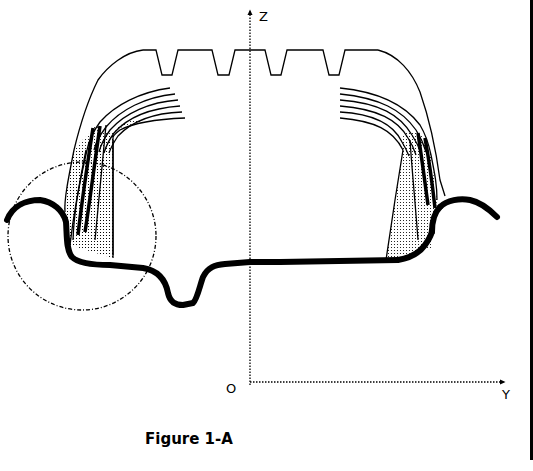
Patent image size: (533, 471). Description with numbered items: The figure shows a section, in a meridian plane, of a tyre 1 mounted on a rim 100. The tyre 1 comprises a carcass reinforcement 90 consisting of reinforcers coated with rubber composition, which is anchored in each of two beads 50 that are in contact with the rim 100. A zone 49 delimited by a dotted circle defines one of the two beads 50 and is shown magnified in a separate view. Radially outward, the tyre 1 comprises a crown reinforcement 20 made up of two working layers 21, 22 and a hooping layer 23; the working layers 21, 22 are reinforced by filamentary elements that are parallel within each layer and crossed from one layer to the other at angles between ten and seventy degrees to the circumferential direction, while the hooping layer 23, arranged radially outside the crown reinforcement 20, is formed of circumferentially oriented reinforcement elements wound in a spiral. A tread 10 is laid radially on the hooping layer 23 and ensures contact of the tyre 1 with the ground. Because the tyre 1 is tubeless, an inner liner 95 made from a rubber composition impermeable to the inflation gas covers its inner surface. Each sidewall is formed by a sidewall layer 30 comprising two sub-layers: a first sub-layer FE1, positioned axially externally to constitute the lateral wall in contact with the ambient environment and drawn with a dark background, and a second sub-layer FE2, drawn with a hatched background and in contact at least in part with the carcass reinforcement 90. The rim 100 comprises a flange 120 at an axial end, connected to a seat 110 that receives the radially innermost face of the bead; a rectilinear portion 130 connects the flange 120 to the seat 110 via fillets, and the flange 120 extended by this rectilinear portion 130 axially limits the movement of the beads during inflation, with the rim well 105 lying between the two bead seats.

The tyre 1 is at (93, 67).
The tread 10 is at (118, 55).
The crown reinforcement 20 is at (298, 111).
The working layer 21 is at (278, 130).
The working layer 22 is at (393, 113).
The hooping layer 23 is at (383, 105).
The sidewall layer 30 is at (85, 135).
The zone 49 is at (135, 180).
The bead 50 is at (108, 203).
The carcass reinforcement 90 is at (258, 121).
The inner liner 95 is at (303, 122).
The rim 100 is at (199, 307).
The rim well 105 is at (271, 266).
The seat 110 is at (410, 266).
The flange 120 is at (471, 198).
The rectilinear portion 130 is at (437, 232).
The first sub-layer FE1 is at (408, 156).
The second sub-layer FE2 is at (410, 170).